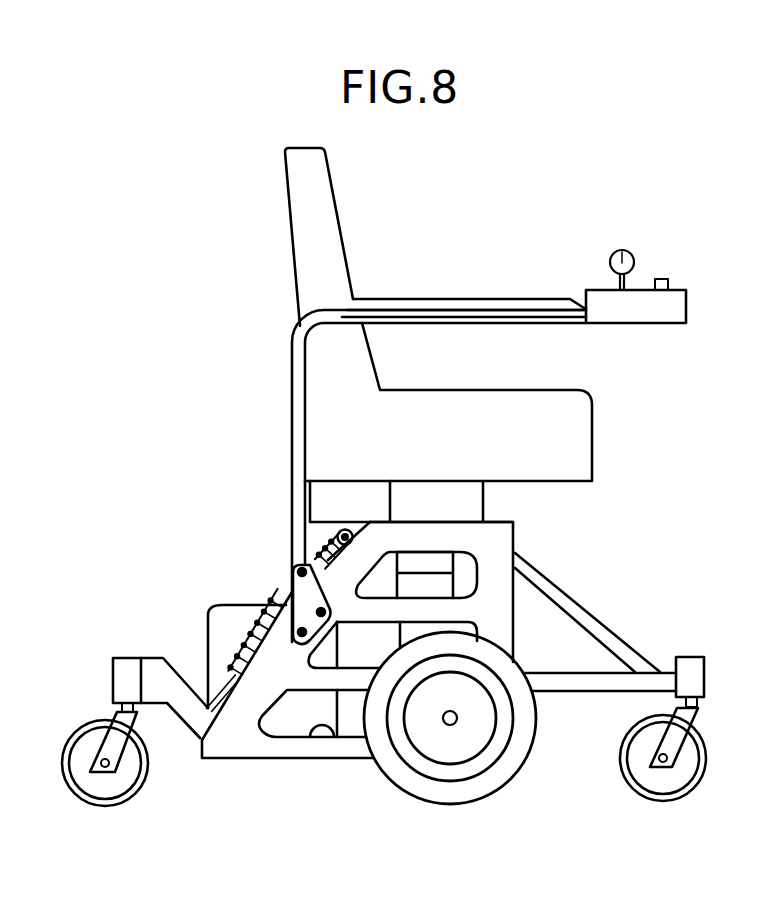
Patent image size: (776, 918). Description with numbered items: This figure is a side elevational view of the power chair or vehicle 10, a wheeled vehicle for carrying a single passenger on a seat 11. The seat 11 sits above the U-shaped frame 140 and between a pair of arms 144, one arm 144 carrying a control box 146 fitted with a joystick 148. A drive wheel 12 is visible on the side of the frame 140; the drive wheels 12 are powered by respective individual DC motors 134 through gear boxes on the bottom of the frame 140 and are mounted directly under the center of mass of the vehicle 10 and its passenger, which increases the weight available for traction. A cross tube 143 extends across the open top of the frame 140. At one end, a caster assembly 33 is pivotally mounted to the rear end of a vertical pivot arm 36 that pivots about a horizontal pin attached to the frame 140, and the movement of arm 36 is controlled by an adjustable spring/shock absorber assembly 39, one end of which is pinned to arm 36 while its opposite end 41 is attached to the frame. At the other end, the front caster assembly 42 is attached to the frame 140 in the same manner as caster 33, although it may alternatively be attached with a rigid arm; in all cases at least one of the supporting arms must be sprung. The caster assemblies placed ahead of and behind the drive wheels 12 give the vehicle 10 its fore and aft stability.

The power chair 10 is at (610, 489).
The seat 11 is at (476, 418).
The drive wheel 12 is at (508, 762).
The rear wheel caster assembly 33 is at (79, 729).
The vertical pivot arm 36 is at (175, 711).
The adjustable spring/shock absorber assembly 39 is at (243, 645).
The opposite end of spring/shock absorber assembly 41 is at (336, 533).
The front caster assembly 42 is at (707, 762).
The DC motor 134 is at (428, 588).
The U-shaped frame 140 is at (290, 755).
The cross tube 143 is at (595, 622).
The arm 144 is at (522, 320).
The control box 146 is at (681, 316).
The joystick 148 is at (620, 251).